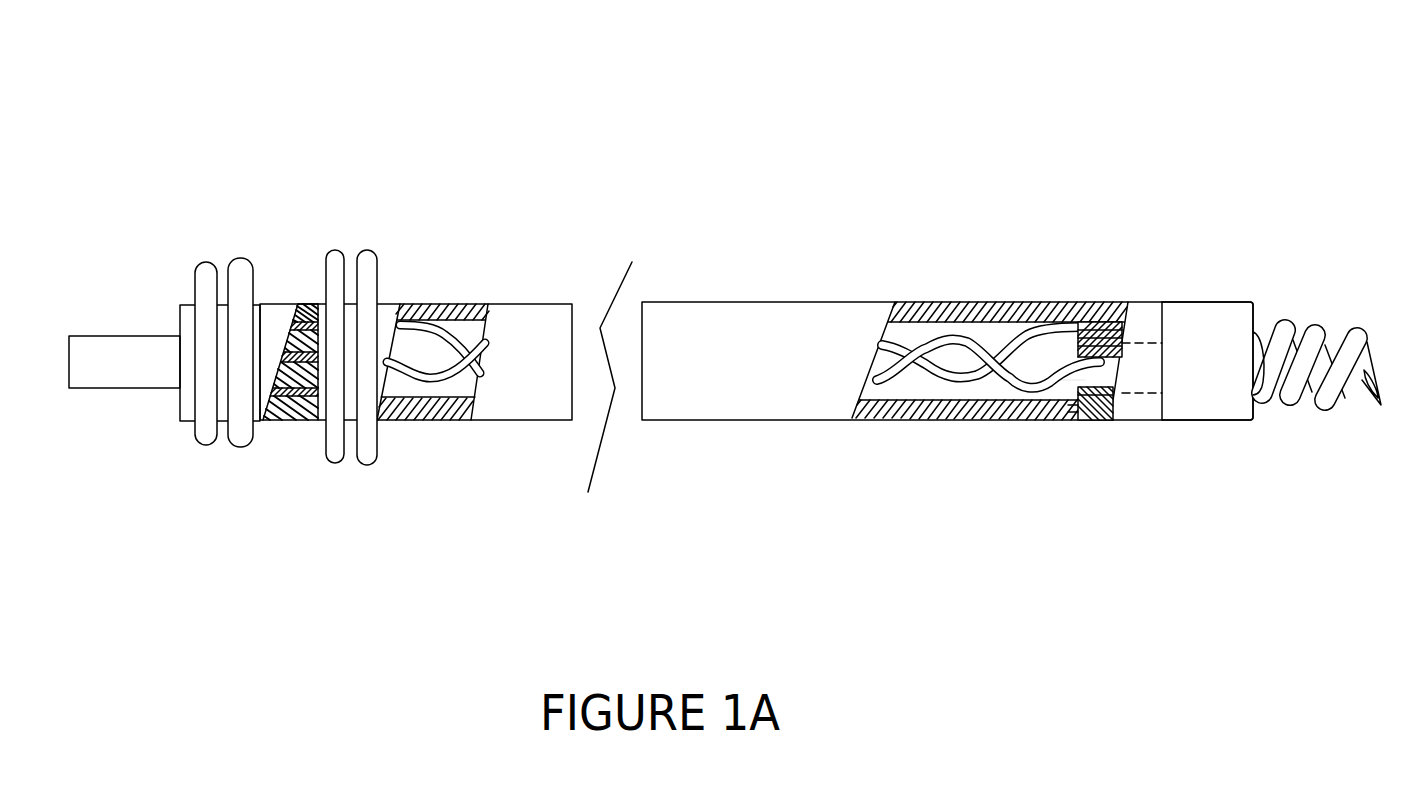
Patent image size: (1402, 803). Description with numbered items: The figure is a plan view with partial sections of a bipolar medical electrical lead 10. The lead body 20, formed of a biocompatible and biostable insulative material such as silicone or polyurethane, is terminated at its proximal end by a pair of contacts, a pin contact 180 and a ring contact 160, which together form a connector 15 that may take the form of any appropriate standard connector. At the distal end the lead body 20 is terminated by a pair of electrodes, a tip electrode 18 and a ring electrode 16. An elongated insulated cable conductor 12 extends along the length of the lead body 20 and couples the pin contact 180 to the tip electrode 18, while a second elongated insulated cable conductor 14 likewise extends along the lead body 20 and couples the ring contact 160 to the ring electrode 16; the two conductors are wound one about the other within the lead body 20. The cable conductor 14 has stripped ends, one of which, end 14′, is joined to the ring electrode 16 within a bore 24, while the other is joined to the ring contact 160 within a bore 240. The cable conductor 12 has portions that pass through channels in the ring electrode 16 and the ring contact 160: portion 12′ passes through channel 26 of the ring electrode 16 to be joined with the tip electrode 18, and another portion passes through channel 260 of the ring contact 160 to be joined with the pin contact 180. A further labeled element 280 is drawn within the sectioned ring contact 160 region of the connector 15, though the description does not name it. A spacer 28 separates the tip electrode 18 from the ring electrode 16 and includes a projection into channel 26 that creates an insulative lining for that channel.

The bipolar medical electrical lead 10 is at (662, 101).
The cable conductor 12 is at (398, 420).
The portion of cable conductor 12′ is at (1088, 372).
The cable conductor 14 is at (423, 303).
The end of cable conductor 14′ is at (1097, 322).
The connector 15 is at (28, 203).
The ring electrode 16 is at (1138, 315).
The tip electrode 18 is at (1313, 342).
The lead body 20 is at (507, 407).
The bore 24 is at (1113, 320).
The channel 26 is at (1083, 400).
The spacer 28 is at (1112, 418).
The ring contact 160 is at (273, 363).
The pin contact 180 is at (117, 375).
The bore 240 is at (300, 303).
The channel 260 is at (280, 422).
The proximal insulator 280 is at (272, 422).